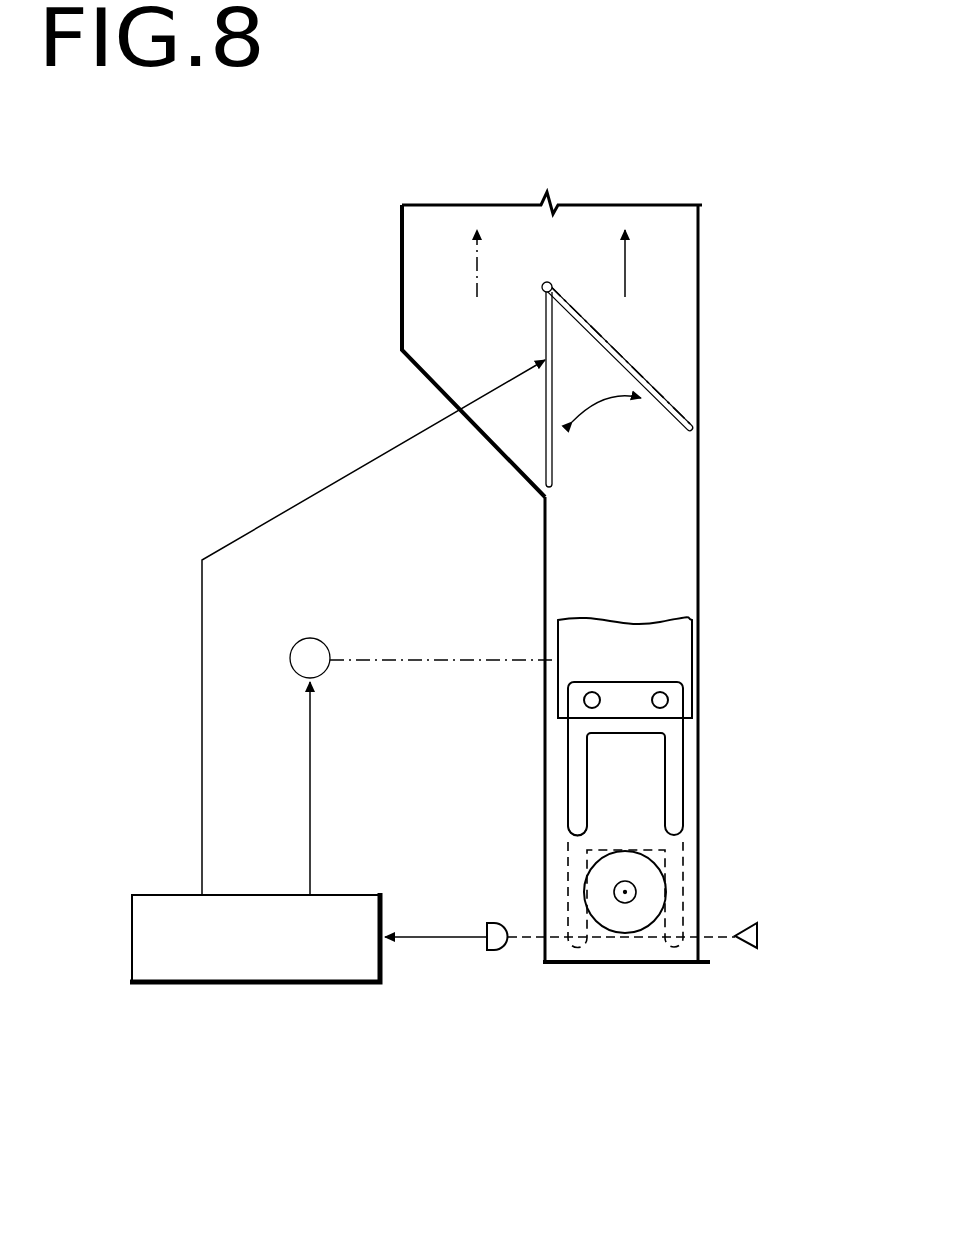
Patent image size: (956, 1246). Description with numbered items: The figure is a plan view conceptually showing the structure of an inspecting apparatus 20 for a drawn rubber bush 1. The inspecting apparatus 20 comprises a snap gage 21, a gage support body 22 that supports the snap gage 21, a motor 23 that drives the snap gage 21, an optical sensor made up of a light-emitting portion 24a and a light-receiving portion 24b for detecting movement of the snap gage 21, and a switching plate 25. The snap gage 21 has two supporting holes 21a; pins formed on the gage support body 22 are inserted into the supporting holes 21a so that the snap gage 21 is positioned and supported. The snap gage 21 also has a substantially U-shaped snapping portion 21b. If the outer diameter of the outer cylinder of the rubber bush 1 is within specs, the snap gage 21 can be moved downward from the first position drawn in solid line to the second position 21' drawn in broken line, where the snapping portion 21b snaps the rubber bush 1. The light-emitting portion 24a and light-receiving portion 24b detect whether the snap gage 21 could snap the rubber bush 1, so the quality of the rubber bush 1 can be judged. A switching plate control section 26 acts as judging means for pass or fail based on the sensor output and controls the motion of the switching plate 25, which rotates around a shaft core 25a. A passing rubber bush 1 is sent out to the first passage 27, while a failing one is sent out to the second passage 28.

The rubber bush 1 is at (625, 940).
The inspecting apparatus 20 is at (198, 530).
The snap gage 21 is at (674, 759).
The supporting holes 21a is at (594, 693).
The snapping portion 21b is at (665, 807).
The second position of snap gage 21' is at (682, 895).
The gage support body 22 is at (688, 705).
The motor 23 is at (317, 640).
The light-emitting portion 24a is at (752, 950).
The light-receiving portion 24b is at (492, 952).
The switching plate 25 is at (543, 460).
The shaft core 25a is at (551, 283).
The switching plate control section 26 is at (283, 984).
The first passage 27 is at (680, 248).
The second passage 28 is at (417, 250).